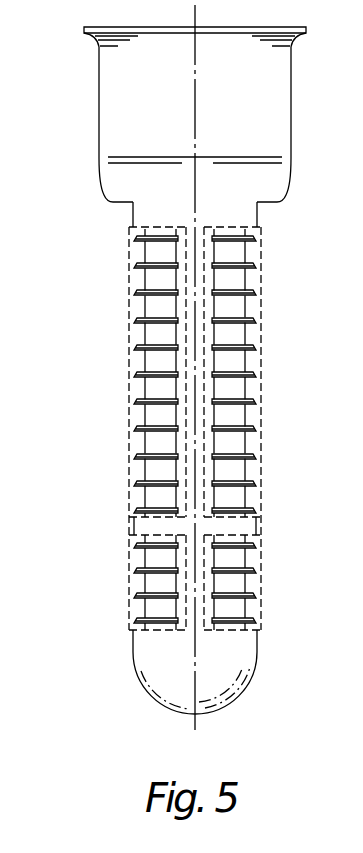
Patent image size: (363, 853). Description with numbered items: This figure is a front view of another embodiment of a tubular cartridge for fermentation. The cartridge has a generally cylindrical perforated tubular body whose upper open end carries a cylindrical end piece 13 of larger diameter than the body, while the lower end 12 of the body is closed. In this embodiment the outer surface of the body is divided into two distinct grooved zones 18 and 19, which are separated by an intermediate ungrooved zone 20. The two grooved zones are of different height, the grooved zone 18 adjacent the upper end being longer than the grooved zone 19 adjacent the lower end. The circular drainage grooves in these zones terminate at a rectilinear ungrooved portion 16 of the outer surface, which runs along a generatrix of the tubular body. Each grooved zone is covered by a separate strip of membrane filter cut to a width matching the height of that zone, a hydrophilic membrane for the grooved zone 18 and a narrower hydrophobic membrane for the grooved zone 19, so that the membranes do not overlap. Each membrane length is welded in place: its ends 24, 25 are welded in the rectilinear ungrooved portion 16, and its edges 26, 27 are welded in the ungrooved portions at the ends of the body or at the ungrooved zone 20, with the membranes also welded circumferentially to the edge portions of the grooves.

The cylindrical end piece 13 is at (60, 33).
The grooved zone 18 is at (60, 227).
The intermediate ungrooved zone 20 is at (60, 512).
The grooved zone 19 is at (60, 547).
The lower end 12 is at (60, 640).
The edge 27 is at (150, 230).
The edge 26 is at (145, 513).
The end 24 is at (183, 442).
The end 25 is at (205, 441).
The rectilinear ungrooved portion 16 is at (198, 621).